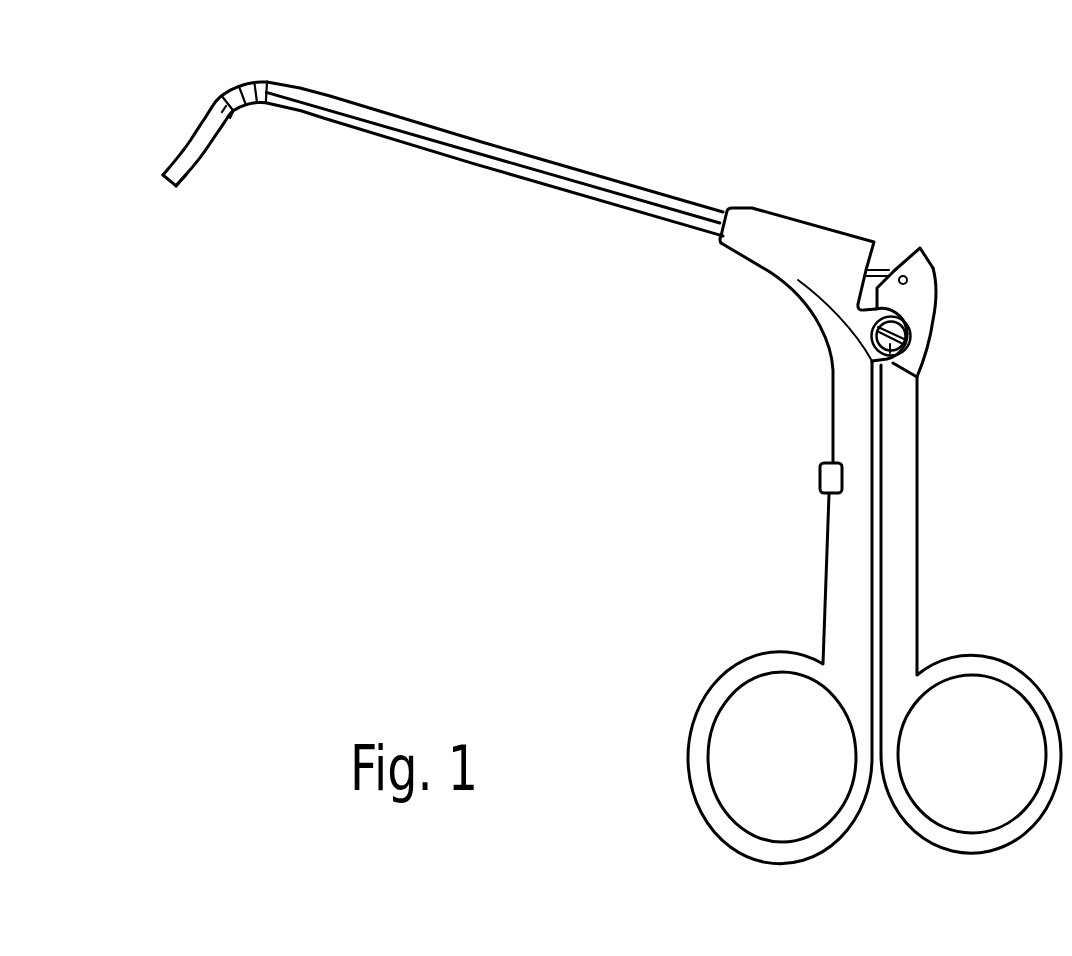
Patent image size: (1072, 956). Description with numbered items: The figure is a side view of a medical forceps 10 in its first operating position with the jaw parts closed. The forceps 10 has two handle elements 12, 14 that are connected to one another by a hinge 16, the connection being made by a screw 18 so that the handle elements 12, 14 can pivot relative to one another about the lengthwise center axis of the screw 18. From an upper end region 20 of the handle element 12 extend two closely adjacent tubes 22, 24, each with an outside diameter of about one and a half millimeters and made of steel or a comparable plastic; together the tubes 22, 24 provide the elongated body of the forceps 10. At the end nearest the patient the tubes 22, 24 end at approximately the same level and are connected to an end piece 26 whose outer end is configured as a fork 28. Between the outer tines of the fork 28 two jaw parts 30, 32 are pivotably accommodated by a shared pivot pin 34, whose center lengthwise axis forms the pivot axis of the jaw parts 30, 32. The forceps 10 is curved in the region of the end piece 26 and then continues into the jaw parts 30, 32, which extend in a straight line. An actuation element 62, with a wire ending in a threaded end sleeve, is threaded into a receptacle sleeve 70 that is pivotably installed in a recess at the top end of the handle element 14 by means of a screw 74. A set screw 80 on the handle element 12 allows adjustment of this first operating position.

The medical forceps 10 is at (846, 134).
The handle element 12 is at (836, 553).
The handle element 14 is at (892, 503).
The hinge 16 is at (923, 340).
The screw 18 is at (896, 363).
The upper end region 20 is at (792, 262).
The tube 22 is at (703, 208).
The tube 24 is at (688, 220).
The end piece 26 is at (250, 112).
The fork 28 is at (218, 101).
The jaw part 30 is at (163, 171).
The jaw part 32 is at (177, 191).
The pivot pin 34 is at (230, 138).
The actuation element 62 is at (878, 270).
The receptacle sleeve 70 is at (891, 270).
The screw 74 is at (908, 279).
The set screw 80 is at (820, 477).